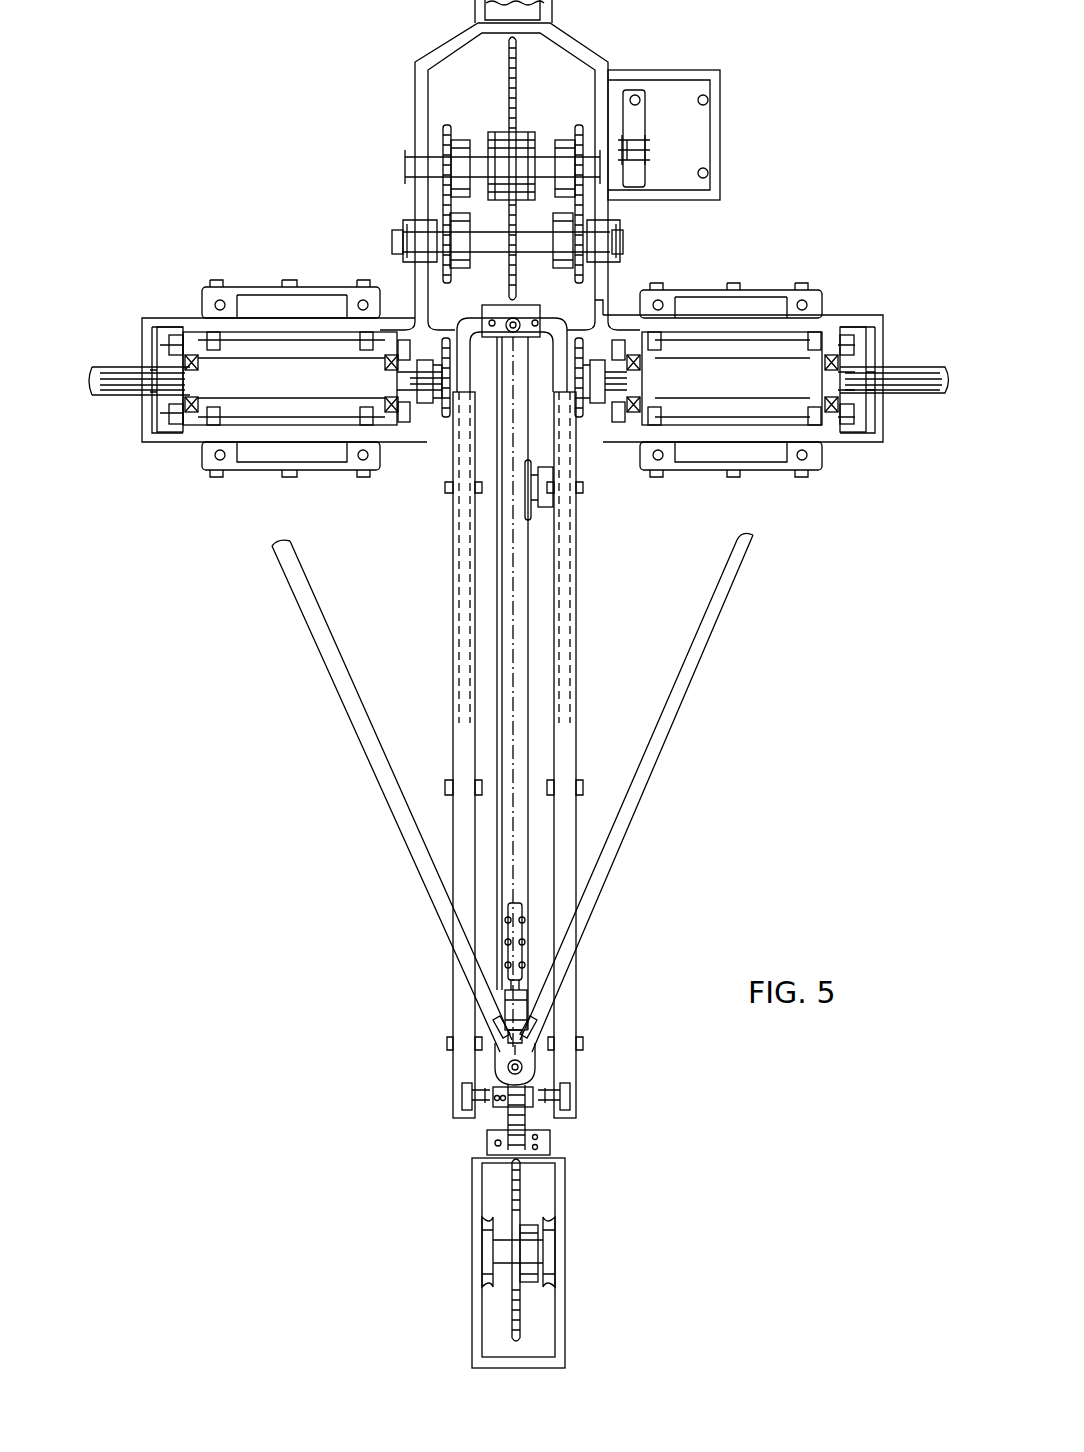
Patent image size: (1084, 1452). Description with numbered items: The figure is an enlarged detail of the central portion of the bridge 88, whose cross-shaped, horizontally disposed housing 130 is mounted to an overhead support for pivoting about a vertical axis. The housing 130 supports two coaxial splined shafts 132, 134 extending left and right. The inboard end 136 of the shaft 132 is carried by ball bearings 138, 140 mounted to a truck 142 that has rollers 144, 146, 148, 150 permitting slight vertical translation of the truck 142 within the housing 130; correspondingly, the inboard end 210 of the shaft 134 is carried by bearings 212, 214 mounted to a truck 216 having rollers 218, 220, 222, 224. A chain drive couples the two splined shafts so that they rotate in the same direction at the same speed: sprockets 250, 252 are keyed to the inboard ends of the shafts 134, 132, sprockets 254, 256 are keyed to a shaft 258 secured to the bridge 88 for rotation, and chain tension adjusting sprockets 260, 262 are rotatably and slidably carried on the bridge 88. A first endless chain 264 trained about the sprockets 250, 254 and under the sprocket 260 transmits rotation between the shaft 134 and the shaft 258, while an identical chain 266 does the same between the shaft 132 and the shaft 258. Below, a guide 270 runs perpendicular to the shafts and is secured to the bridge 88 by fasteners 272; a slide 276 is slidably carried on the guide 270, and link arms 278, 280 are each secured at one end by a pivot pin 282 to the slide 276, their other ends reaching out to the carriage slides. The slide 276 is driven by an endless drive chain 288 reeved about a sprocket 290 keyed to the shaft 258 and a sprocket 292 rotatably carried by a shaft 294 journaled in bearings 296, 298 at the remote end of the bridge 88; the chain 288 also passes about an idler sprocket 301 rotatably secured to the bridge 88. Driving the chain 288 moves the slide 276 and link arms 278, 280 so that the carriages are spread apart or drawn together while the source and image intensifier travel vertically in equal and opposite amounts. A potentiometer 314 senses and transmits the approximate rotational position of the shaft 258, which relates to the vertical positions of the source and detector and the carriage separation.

The bridge 88 is at (580, 40).
The housing 130 is at (576, 595).
The splined shaft 132 is at (905, 362).
The splined shaft 134 is at (118, 370).
The inboard end of shaft 132 136 is at (862, 347).
The ball bearing 138 is at (633, 343).
The ball bearing 140 is at (830, 343).
The truck 142 is at (747, 345).
The roller 144 is at (617, 328).
The roller 146 is at (620, 430).
The roller 148 is at (847, 332).
The roller 150 is at (850, 430).
The inboard end of shaft 134 210 is at (120, 385).
The bearing 212 is at (360, 333).
The bearing 214 is at (193, 427).
The truck 216 is at (245, 358).
The roller 218 is at (177, 327).
The roller 220 is at (173, 430).
The roller 222 is at (395, 377).
The roller 224 is at (407, 427).
The sprocket 250 is at (445, 420).
The sprocket 252 is at (580, 420).
The sprocket 254 is at (447, 127).
The sprocket 256 is at (582, 117).
The shaft 258 is at (480, 157).
The chain tension adjusting sprocket 260 is at (440, 268).
The chain tension adjusting sprocket 262 is at (570, 255).
The first endless chain 264 is at (445, 303).
The endless chain 266 is at (600, 287).
The guide 270 is at (518, 677).
The fastener 272 is at (513, 337).
The slide 276 is at (507, 1050).
The link arm 278 is at (405, 898).
The link arm 280 is at (658, 780).
The pivot pin 282 is at (523, 1068).
The endless drive chain 288 is at (520, 905).
The sprocket 290 is at (508, 55).
The sprocket 292 is at (515, 1192).
The shaft 294 is at (503, 1250).
The bearing 296 is at (487, 1237).
The bearing 298 is at (553, 1247).
The idler sprocket 301 is at (532, 520).
The potentiometer 314 is at (670, 85).